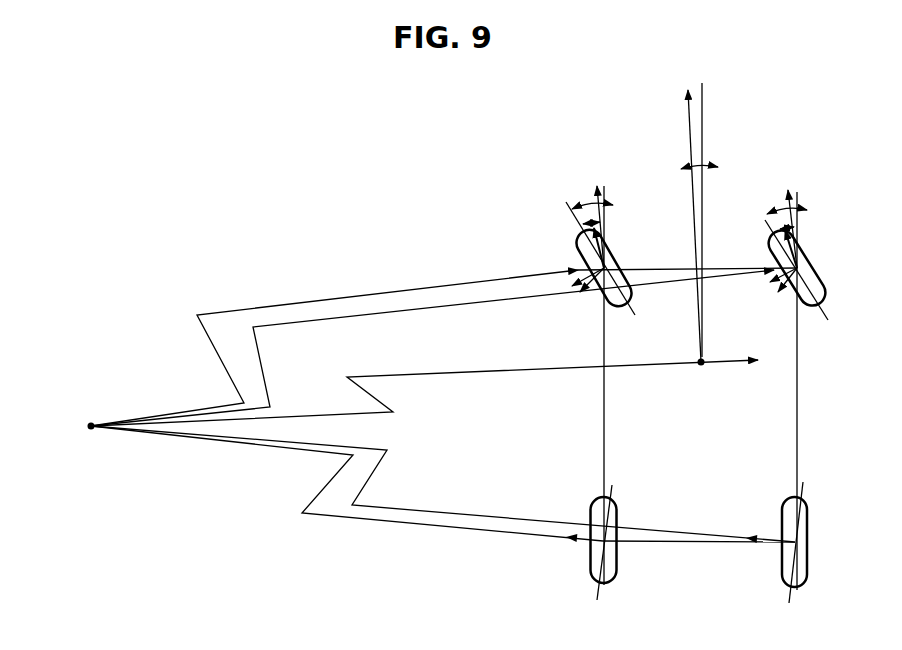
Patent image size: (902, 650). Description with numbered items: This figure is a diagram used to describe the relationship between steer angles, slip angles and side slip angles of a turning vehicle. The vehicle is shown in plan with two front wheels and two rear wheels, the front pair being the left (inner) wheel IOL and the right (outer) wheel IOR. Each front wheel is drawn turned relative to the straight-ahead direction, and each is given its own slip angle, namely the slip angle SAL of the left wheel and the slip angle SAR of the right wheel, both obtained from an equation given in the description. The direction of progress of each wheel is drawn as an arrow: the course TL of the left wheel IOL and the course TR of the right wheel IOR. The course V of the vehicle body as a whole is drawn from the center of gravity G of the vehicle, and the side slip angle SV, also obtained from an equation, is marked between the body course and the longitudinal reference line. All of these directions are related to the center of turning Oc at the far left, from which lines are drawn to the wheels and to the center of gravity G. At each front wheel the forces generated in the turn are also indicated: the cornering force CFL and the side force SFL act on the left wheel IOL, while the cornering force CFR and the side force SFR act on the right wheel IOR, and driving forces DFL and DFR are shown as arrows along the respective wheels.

The center of turning Oc is at (86, 414).
The center of gravity of the vehicle G is at (424, 393).
The course of the vehicle body V is at (691, 210).
The side slip angle SV is at (698, 167).
The left (inner) wheel IOL is at (580, 230).
The slip angle of the left (inner) wheel SAL is at (582, 208).
The course of the left wheel TL is at (596, 216).
The left wheel driving force DFL is at (607, 258).
The cornering force acting on the left wheel CFL is at (585, 266).
The side force acting on the left wheel SFL is at (592, 277).
The right (outer) wheel IOR is at (827, 290).
The slip angle of the right (outer) wheel SAR is at (777, 210).
The course of the right wheel TR is at (793, 211).
The right wheel driving force DFR is at (803, 260).
The cornering force acting on the right wheel CFR is at (770, 282).
The side force acting on the right wheel SFR is at (787, 280).